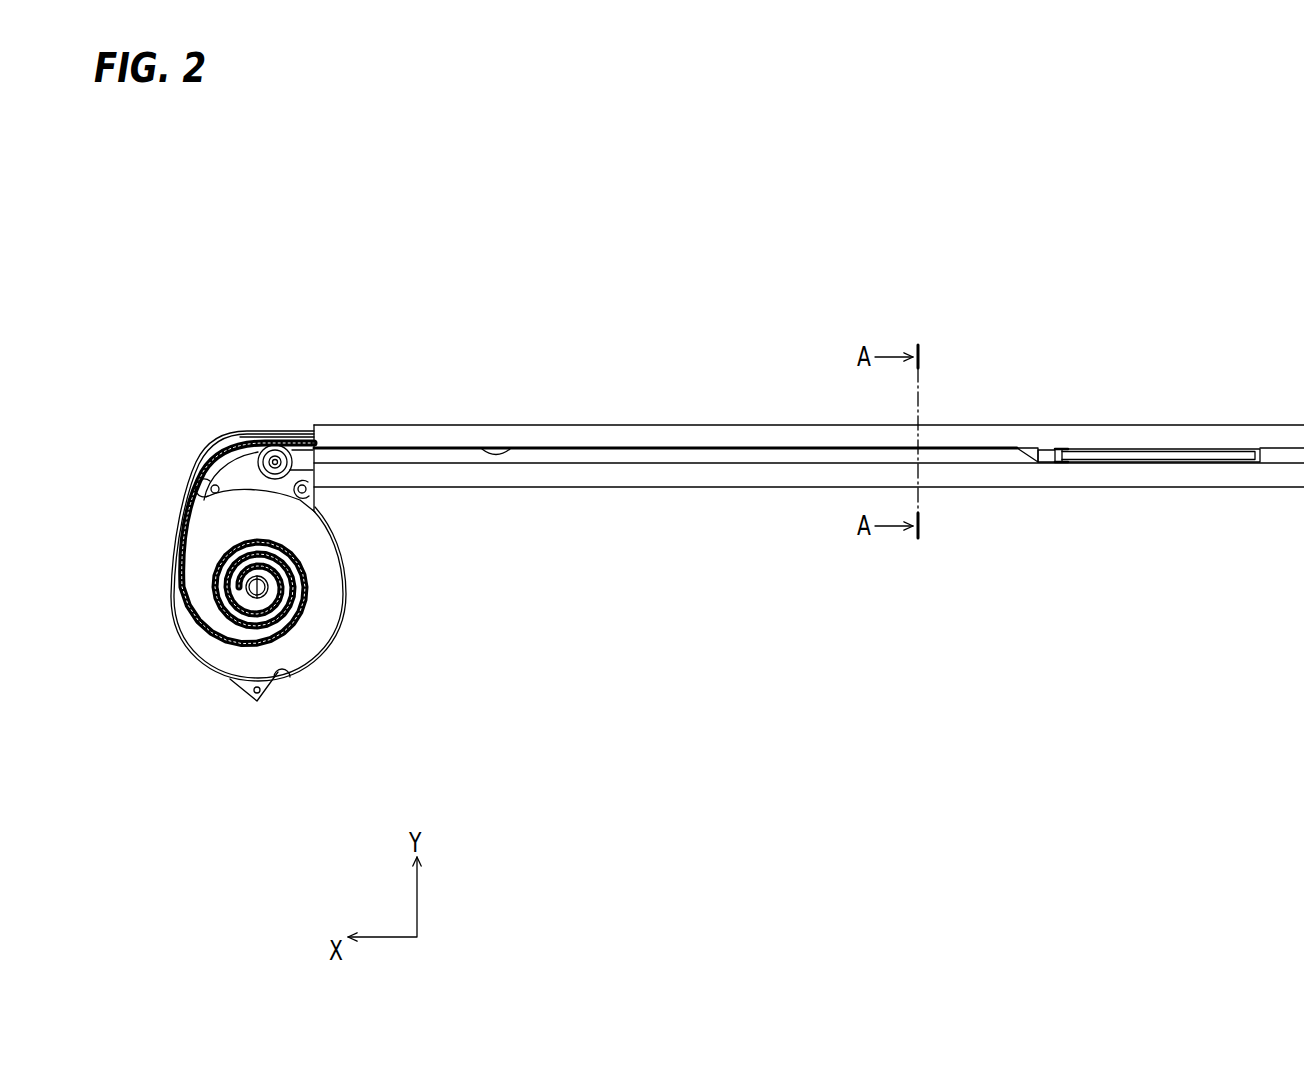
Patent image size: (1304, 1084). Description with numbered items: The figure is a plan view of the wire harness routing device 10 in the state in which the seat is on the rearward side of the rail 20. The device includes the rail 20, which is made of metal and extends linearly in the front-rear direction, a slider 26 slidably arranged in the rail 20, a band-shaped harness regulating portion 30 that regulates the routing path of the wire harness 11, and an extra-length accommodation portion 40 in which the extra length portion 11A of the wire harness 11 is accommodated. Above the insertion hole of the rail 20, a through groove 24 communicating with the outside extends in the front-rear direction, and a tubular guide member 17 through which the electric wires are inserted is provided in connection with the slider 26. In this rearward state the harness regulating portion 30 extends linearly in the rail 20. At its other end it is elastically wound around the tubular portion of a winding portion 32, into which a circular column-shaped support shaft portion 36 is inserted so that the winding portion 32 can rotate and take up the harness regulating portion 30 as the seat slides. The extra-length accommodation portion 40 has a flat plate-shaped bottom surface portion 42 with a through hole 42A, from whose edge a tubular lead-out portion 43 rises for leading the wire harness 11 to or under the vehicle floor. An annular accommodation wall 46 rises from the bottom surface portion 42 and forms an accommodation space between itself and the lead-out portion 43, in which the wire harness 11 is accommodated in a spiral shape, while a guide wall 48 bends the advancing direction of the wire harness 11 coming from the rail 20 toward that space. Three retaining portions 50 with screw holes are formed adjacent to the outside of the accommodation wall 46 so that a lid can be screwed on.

The wire harness routing device 10 is at (953, 207).
The wire harness 11 is at (200, 635).
The extra length portion 11A is at (283, 440).
The tubular guide member 17 is at (1031, 448).
The rail 20 is at (638, 438).
The through groove 24 is at (533, 465).
The slider 26 is at (1178, 455).
The harness regulating portion 30 is at (307, 454).
The winding portion 32 is at (262, 457).
The support shaft portion 36 is at (281, 461).
The extra-length accommodation portion 40 is at (197, 692).
The bottom surface portion 42 is at (327, 587).
The through hole 42A is at (290, 627).
The lead-out portion 43 is at (289, 558).
The accommodation wall 46 is at (287, 674).
The guide wall 48 is at (317, 443).
The retaining portion 50 is at (200, 475).